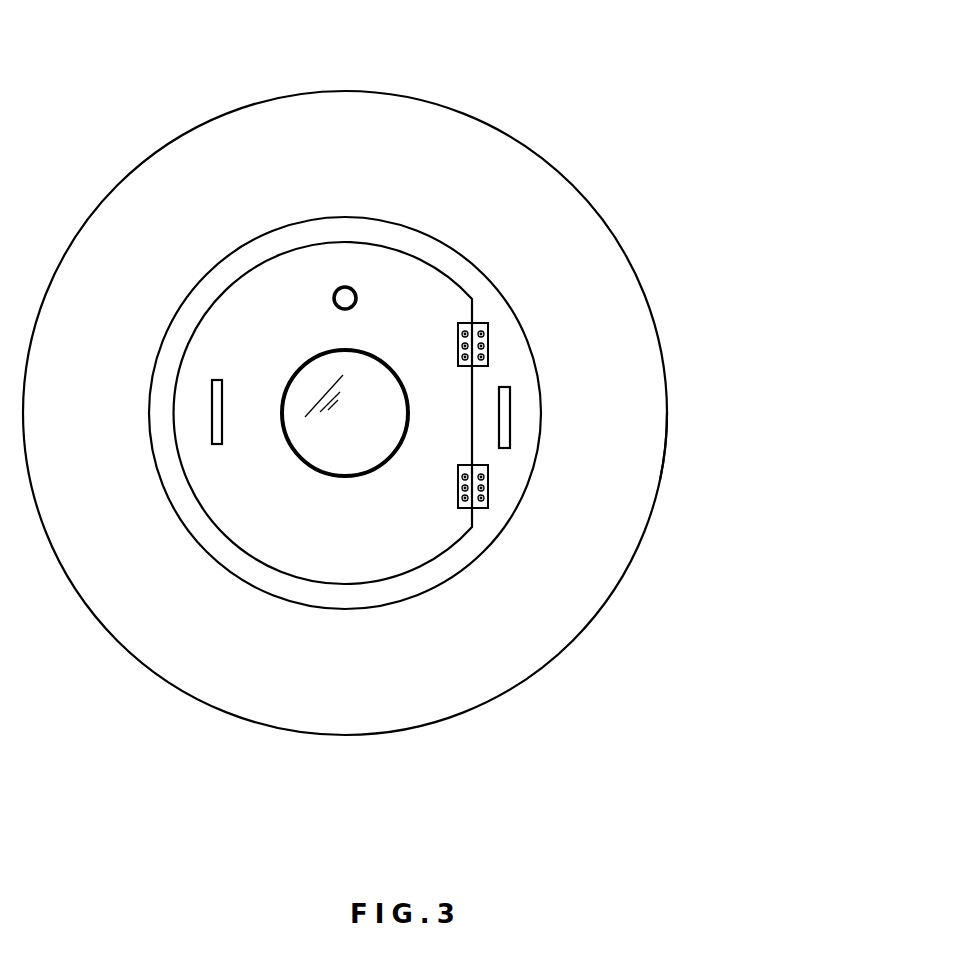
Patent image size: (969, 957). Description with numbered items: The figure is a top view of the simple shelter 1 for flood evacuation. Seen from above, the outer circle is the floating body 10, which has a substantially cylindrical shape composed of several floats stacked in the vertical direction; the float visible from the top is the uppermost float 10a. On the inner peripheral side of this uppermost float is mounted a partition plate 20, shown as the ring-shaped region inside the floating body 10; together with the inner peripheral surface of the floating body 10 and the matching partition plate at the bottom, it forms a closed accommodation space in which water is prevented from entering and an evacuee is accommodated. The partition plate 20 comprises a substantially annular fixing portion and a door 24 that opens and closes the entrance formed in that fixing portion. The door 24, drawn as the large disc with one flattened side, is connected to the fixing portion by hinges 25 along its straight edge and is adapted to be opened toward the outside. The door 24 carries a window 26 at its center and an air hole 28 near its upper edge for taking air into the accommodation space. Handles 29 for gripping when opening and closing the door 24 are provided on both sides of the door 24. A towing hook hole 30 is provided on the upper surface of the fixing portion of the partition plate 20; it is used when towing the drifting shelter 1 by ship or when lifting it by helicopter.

The shelter 1 is at (546, 106).
The floating body 10 is at (631, 261).
The uppermost float 10a is at (628, 438).
The partition plate 20 is at (513, 306).
The door 24 is at (273, 293).
The hinge 25 is at (486, 368).
The window 26 is at (343, 453).
The air hole 28 is at (345, 297).
The handle 29 is at (212, 403).
The towing hook hole 30 is at (503, 410).